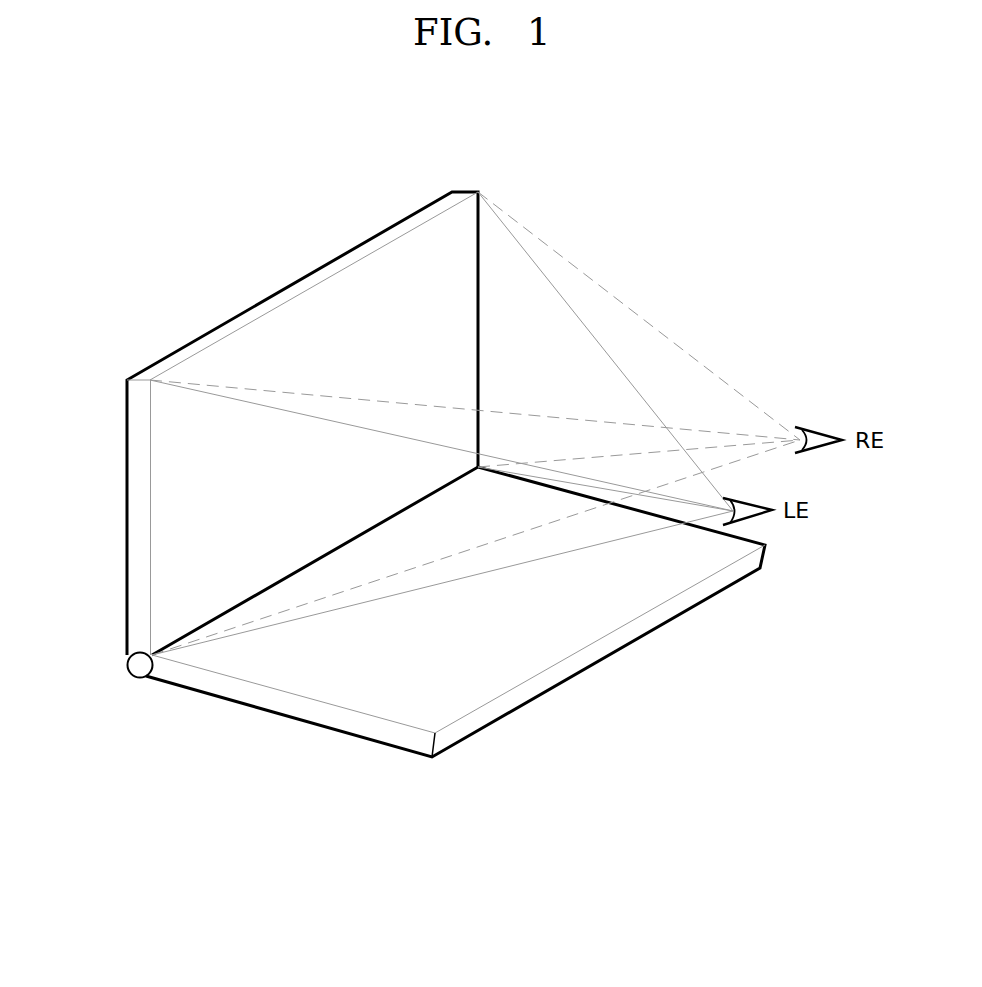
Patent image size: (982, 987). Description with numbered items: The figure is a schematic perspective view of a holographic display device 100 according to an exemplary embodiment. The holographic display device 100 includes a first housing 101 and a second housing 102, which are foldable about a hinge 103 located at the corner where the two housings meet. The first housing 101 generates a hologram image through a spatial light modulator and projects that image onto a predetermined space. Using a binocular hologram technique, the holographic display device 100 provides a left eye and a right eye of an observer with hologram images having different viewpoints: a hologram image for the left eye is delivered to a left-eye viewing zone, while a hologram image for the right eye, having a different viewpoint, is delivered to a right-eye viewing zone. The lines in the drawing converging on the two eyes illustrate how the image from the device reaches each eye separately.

The holographic display device 100 is at (401, 508).
The first housing 101 is at (575, 670).
The second housing 102 is at (130, 525).
The hinge 103 is at (135, 668).